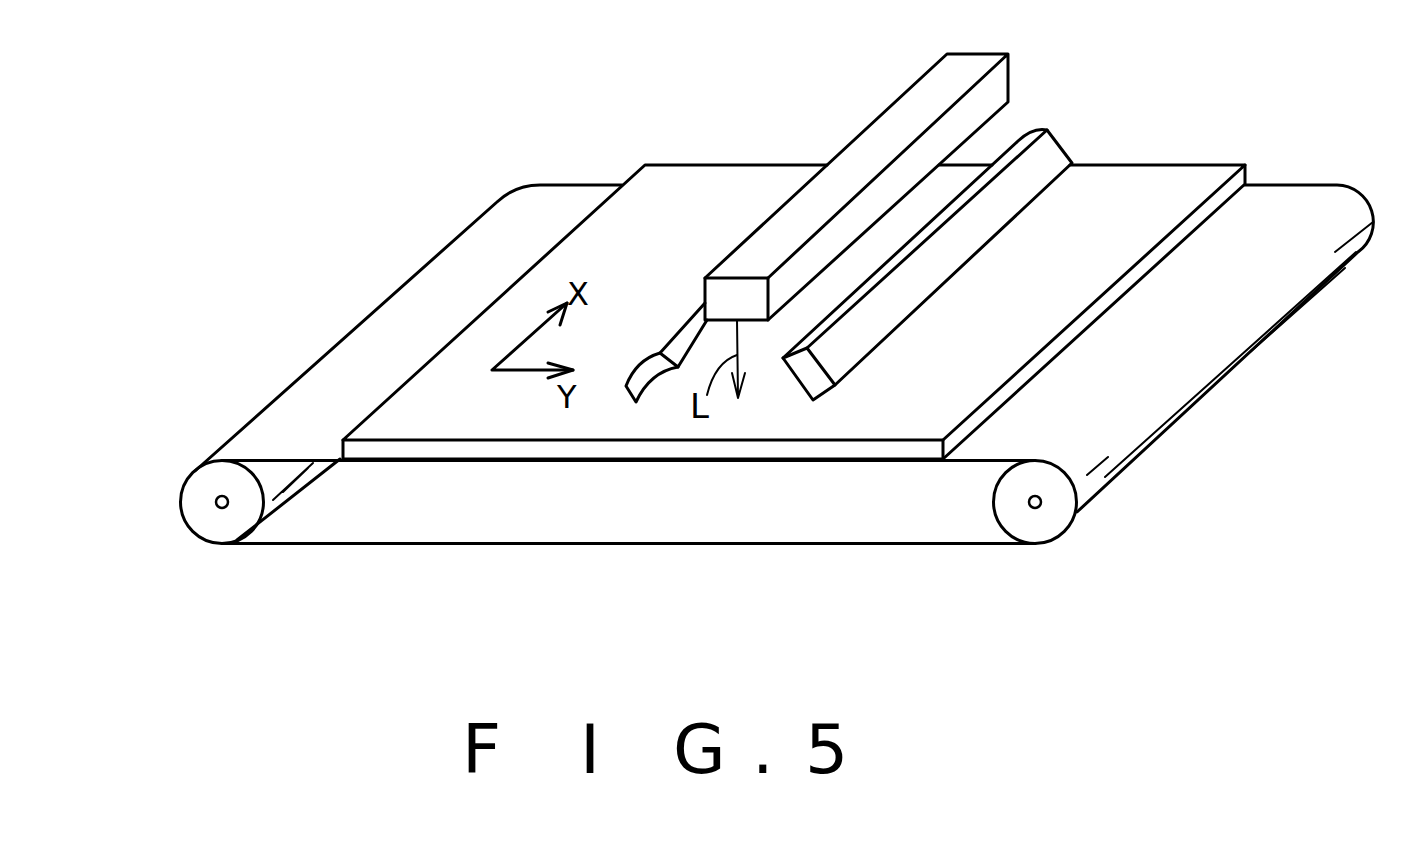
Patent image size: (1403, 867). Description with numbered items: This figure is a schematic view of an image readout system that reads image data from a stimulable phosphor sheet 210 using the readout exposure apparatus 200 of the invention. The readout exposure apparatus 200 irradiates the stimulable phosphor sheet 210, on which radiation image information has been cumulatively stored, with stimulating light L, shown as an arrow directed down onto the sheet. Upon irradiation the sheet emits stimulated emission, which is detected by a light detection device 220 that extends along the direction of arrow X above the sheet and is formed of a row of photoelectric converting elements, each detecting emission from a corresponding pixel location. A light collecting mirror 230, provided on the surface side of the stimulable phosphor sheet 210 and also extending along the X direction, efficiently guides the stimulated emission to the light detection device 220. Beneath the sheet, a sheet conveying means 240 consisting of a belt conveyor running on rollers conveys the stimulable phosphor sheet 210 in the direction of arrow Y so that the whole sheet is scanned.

The readout exposure apparatus 200 is at (856, 131).
The stimulable phosphor sheet 210 is at (668, 178).
The light detection device 220 is at (1063, 150).
The light collecting mirror 230 is at (651, 403).
The sheet conveying means 240 is at (183, 477).